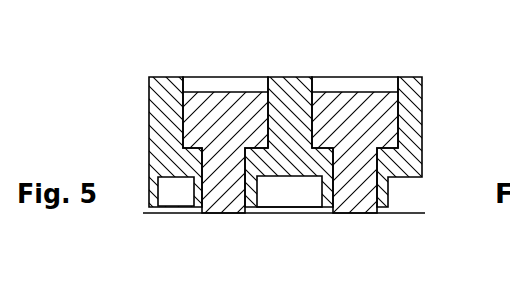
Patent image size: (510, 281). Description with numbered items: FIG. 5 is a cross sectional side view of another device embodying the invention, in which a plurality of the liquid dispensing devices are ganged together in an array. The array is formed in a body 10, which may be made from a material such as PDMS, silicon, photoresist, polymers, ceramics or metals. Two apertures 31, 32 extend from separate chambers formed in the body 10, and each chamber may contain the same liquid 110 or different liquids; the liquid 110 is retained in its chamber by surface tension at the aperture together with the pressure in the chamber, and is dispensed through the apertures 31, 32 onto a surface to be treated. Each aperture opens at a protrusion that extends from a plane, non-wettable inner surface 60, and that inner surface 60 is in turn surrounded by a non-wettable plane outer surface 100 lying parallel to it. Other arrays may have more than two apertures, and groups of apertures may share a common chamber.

The body 10 is at (413, 80).
The liquid 110 is at (220, 92).
The outer surface 100 is at (158, 208).
The aperture 31 is at (237, 192).
The aperture 32 is at (363, 192).
The inner surface 60 is at (287, 195).